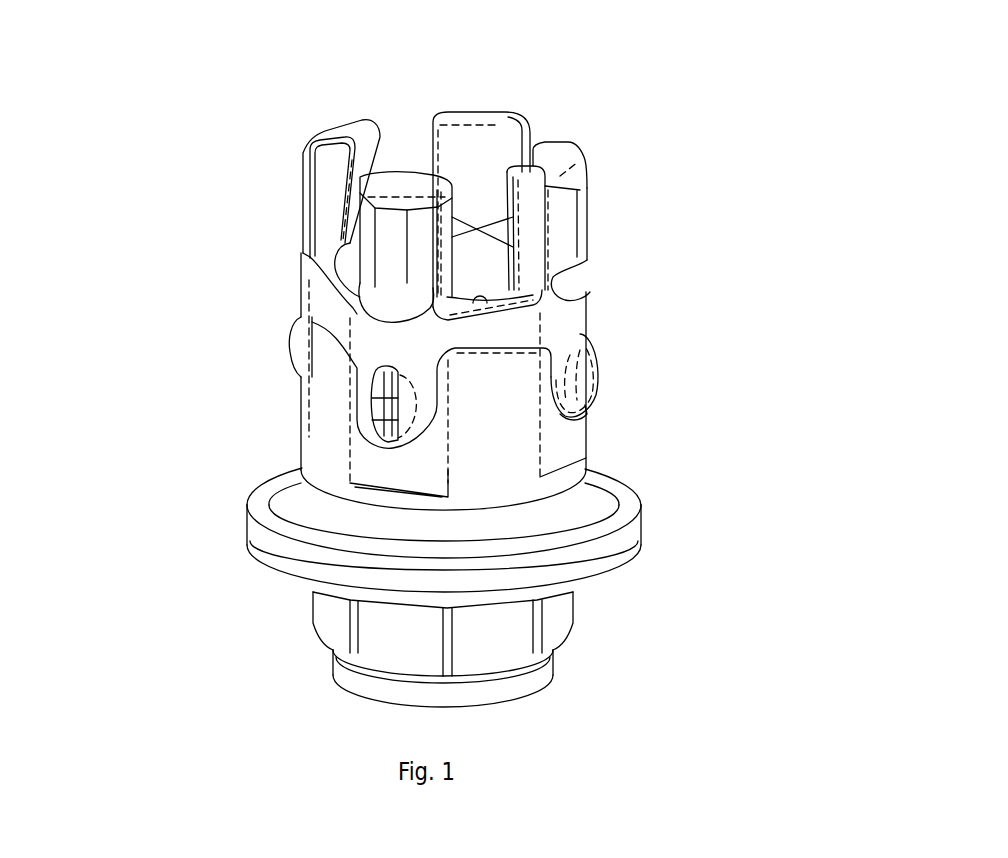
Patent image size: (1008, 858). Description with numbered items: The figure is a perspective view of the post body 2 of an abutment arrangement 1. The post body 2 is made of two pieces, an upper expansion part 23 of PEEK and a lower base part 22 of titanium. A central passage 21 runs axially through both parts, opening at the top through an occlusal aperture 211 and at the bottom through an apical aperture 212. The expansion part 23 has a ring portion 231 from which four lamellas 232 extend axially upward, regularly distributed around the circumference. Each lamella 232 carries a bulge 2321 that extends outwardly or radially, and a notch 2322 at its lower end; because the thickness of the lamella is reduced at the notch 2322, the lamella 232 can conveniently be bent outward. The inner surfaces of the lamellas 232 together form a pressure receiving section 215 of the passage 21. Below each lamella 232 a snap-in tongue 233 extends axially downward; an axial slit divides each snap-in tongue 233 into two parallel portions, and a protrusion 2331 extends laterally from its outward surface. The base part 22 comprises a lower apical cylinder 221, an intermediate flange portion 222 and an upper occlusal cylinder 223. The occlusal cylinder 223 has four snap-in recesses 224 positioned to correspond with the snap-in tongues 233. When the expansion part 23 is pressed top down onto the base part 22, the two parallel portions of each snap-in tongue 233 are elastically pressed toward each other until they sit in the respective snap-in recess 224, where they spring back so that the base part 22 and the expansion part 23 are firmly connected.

The abutment arrangement 1 is at (210, 132).
The post body 2 is at (670, 322).
The central passage 21 is at (411, 124).
The occlusal aperture 211 is at (355, 128).
The pressure receiving section 215 is at (486, 147).
The apical aperture 212 is at (507, 700).
The base part 22 is at (215, 514).
The apical cylinder 221 is at (328, 620).
The flange portion 222 is at (615, 552).
The occlusal cylinder 223 is at (328, 435).
The snap-in recess 224 is at (582, 413).
The expansion part 23 is at (278, 205).
The ring portion 231 is at (328, 312).
The lamella 232 is at (555, 128).
The bulge 2321 is at (565, 205).
The notch 2322 is at (573, 272).
The snap-in tongue 233 is at (370, 383).
The protrusion 2331 is at (583, 385).